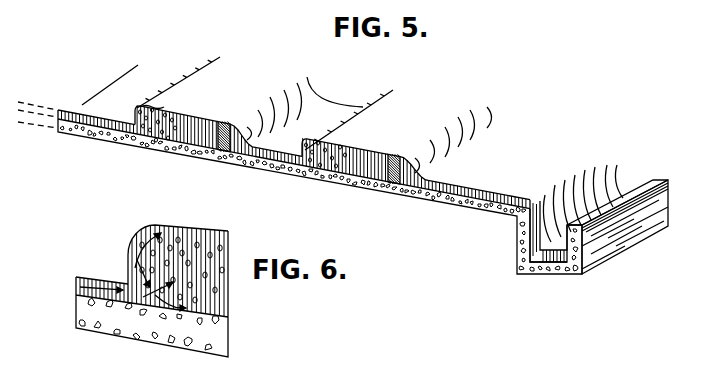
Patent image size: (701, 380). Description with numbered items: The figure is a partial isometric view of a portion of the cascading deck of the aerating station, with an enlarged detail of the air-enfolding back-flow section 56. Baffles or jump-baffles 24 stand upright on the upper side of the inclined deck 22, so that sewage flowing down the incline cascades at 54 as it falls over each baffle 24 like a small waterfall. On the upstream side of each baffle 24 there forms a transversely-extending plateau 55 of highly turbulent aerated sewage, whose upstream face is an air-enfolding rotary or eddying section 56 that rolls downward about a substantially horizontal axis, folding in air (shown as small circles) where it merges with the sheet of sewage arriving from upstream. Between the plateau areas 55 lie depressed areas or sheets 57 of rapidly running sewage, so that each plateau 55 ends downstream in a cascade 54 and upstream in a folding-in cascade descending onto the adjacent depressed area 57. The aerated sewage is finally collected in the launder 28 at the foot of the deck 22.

In FIG. 5, the inclined deck 22 is at (320, 192).
In FIG. 6, the inclined deck 22 is at (229, 343).
In FIG. 5, the jump-baffle 24 is at (223, 149).
In FIG. 5, the launder 28 is at (542, 254).
In FIG. 5, the cascade 54 is at (243, 114).
In FIG. 5, the plateau 55 is at (188, 112).
In FIG. 6, the plateau 55 is at (218, 237).
In FIG. 5, the air-enfolding back-flow section 56 is at (137, 120).
In FIG. 6, the air-enfolding back-flow section 56 is at (128, 270).
In FIG. 5, the depressed area 57 is at (84, 108).
In FIG. 6, the depressed area 57 is at (82, 277).